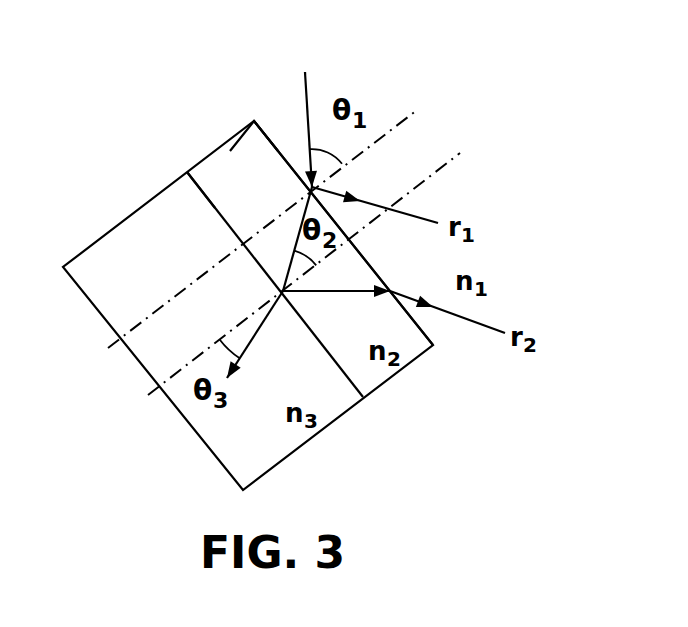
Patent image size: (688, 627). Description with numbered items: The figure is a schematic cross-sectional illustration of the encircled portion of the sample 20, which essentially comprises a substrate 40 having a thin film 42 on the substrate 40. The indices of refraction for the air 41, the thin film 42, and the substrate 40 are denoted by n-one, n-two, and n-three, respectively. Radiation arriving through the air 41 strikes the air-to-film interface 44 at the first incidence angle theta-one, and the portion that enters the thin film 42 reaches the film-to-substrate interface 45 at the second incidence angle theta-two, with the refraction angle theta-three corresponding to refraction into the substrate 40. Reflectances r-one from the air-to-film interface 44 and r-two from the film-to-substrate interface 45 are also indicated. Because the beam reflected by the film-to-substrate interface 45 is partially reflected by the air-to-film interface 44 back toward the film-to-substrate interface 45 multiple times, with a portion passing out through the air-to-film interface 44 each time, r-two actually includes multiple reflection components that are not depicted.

The sample 20 is at (345, 442).
The substrate 40 is at (174, 274).
The air 41 is at (531, 212).
The thin film 42 is at (268, 195).
The air-to-film interface 44 is at (254, 119).
The film-to-substrate interface 45 is at (186, 170).